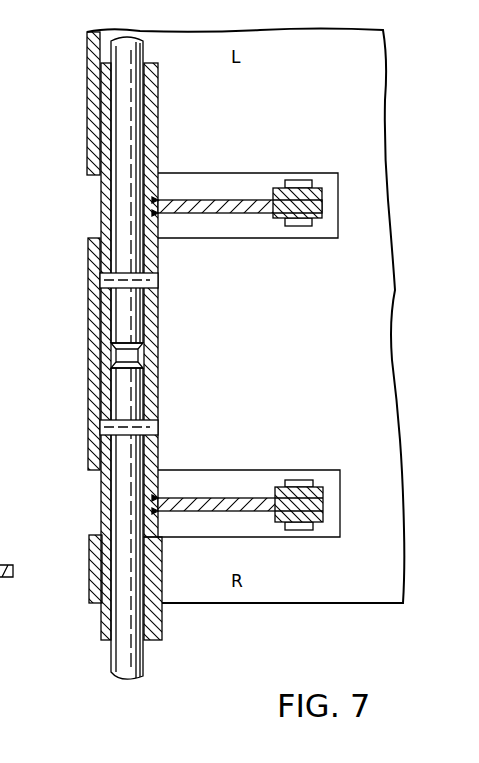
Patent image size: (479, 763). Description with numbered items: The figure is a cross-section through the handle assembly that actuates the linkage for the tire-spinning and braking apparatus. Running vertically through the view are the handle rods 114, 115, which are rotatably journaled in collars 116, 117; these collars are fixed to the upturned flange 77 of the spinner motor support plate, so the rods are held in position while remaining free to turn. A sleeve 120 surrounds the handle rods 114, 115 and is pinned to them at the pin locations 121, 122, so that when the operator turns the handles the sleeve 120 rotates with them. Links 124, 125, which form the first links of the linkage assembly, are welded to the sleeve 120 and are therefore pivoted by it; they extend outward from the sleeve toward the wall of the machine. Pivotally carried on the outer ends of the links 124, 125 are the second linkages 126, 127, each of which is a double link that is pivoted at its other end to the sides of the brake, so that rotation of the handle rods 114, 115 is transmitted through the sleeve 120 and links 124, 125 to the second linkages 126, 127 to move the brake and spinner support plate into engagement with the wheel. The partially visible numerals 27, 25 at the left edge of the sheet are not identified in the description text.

The upwardly turned back surface portion 77 is at (93, 70).
The handle rod 114 is at (122, 177).
The handle rod 115 is at (125, 520).
The collar 116 is at (152, 97).
The collar 117 is at (158, 580).
The sleeve 120 is at (158, 340).
The pin 121 is at (158, 285).
The pin 122 is at (158, 428).
The link 124 is at (227, 205).
The link 125 is at (245, 505).
The second linkage 126 is at (317, 193).
The second linkage 127 is at (320, 515).
The partial reference (cut off) 27 is at (13, 377).
The partial reference (cut off) 25 is at (11, 452).